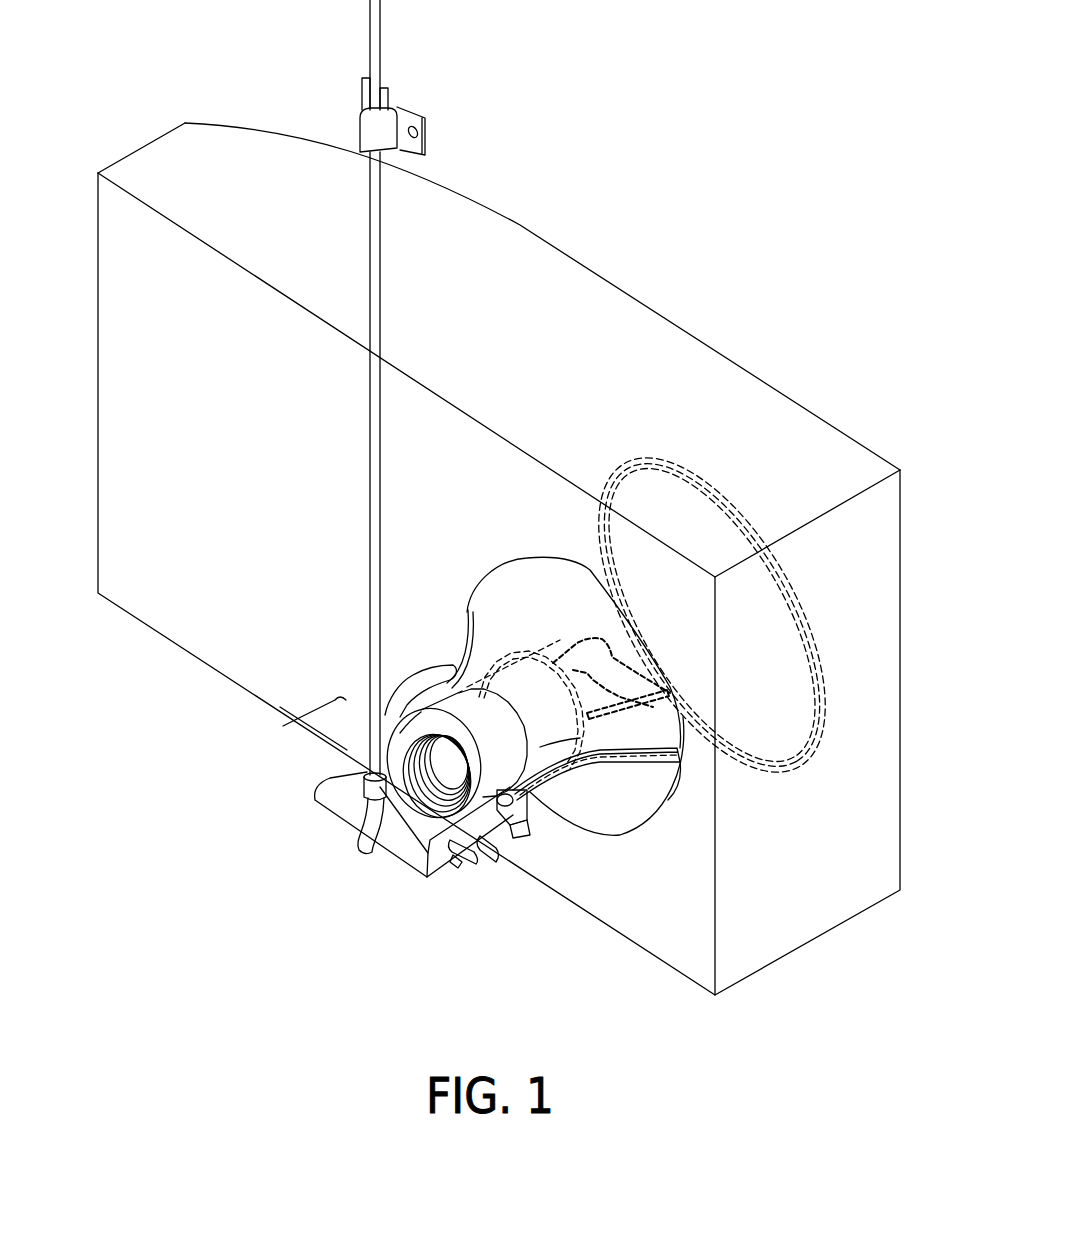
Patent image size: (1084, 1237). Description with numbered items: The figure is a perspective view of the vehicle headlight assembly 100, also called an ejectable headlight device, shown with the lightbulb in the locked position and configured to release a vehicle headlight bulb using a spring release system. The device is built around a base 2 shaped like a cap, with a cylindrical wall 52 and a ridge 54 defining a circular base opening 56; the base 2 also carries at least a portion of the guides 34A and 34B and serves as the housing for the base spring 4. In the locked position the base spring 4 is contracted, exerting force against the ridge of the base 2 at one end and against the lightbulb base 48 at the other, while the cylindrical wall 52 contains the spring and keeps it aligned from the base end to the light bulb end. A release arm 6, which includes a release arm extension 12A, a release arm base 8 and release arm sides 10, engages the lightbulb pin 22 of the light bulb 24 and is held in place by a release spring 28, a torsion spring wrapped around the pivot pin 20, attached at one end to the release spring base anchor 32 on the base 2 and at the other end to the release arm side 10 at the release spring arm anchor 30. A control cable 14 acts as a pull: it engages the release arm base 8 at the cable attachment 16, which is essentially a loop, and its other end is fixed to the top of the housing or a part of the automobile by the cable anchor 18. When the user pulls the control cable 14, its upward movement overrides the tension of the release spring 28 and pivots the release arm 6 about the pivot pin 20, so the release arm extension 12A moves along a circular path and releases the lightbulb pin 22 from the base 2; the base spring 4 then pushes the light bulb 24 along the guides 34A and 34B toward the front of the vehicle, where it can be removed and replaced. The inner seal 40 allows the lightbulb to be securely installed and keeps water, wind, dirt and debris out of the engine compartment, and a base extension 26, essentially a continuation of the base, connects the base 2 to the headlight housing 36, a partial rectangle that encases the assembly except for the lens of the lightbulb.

The vehicle headlight assembly 100 is at (126, 832).
The base 2 is at (445, 705).
The base spring 4 is at (398, 780).
The release arm 6 is at (243, 752).
The release arm base 8 is at (337, 813).
The release arm sides 10 is at (506, 868).
The release arm extension 12A is at (552, 790).
The control cable 14 is at (373, 35).
The cable attachment 16 is at (366, 852).
The cable anchor 18 is at (367, 128).
The pivot pin 20 is at (488, 845).
The lightbulb pin 22 is at (535, 790).
The light bulb 24 is at (760, 637).
The base extension 26 is at (657, 803).
The release spring 28 is at (524, 860).
The release spring arm anchor 30 is at (460, 870).
The release spring base anchor 32 is at (528, 805).
The guide 34A is at (677, 754).
The guide 34B is at (465, 612).
The housing 36 is at (593, 277).
The inner seal 40 is at (527, 650).
The lightbulb base 48 is at (547, 747).
The cylindrical wall 52 is at (357, 858).
The ridge 54 is at (400, 733).
The base opening 56 is at (487, 745).